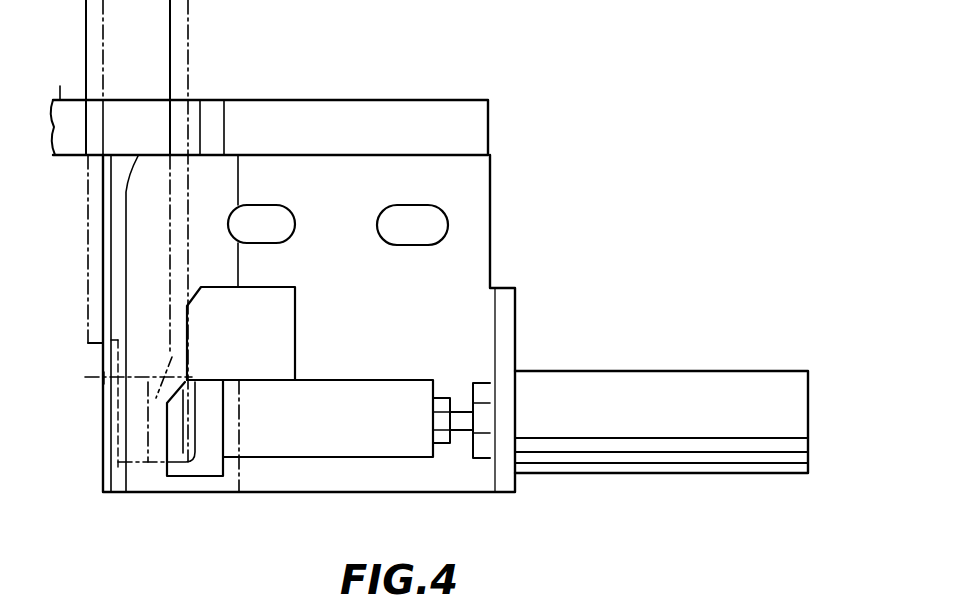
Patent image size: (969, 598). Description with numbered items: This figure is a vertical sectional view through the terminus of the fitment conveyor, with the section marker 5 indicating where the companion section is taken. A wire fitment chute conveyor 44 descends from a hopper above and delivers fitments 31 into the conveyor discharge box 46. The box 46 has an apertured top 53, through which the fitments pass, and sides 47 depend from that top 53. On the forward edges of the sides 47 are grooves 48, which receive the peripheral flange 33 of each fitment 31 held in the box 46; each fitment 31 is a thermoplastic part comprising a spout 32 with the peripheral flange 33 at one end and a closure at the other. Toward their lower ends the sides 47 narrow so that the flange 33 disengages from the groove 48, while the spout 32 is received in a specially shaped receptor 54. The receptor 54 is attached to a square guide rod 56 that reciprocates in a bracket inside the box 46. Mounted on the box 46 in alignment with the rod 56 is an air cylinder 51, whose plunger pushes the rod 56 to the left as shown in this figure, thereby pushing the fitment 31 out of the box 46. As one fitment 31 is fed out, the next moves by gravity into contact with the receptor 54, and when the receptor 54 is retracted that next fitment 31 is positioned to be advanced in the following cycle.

The section line 5- 5 is at (232, 80).
The fitment 31 is at (103, 428).
The spout 32 is at (170, 362).
The peripheral flange 33 is at (103, 358).
The wire fitment chute conveyor 44 is at (186, 46).
The conveyor discharge box 46 is at (287, 98).
The sides 47 is at (364, 310).
The grooves 48 is at (126, 247).
The air cylinder 51 is at (686, 418).
The apertured top 53 is at (213, 113).
The receptor 54 is at (213, 420).
The square guide rod 56 is at (338, 395).